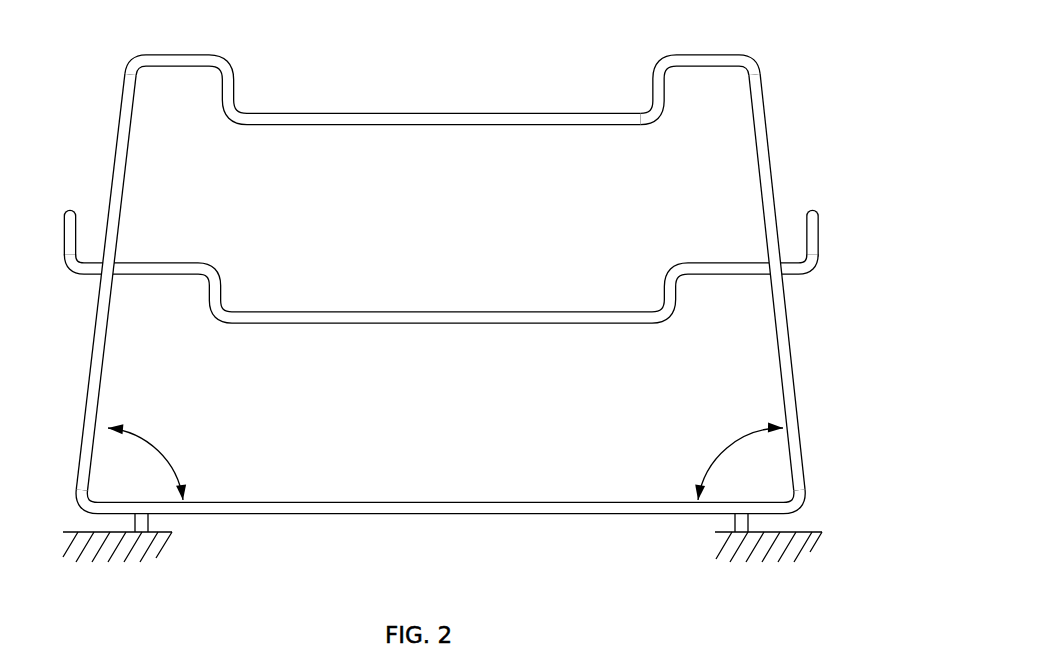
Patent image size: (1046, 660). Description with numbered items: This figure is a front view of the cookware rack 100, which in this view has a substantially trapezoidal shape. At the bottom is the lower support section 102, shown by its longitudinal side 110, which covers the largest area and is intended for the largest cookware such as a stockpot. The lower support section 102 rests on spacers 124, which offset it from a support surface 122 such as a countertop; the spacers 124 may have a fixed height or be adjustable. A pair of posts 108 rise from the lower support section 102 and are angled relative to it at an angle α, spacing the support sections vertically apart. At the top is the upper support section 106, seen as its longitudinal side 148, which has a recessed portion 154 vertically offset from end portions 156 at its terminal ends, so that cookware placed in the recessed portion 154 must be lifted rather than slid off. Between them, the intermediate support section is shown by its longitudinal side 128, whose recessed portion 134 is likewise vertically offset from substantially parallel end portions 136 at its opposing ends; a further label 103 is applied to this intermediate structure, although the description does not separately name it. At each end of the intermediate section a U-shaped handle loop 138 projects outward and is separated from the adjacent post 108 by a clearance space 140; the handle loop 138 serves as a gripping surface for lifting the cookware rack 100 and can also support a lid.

The cookware rack 100 is at (459, 299).
The lower support section 102 is at (474, 306).
The intermediate support wire 103 is at (482, 283).
The upper support section 106 is at (618, 127).
The post 108 is at (764, 136).
The longitudinal side of the lower support section 110 is at (405, 503).
The support surface 122 is at (98, 529).
The spacer 124 is at (148, 518).
The longitudinal side of the intermediate support section 128 is at (316, 324).
The recessed portion 134 is at (428, 312).
The end portion 136 is at (160, 264).
The handle loop 138 is at (818, 241).
The clearance space 140 is at (773, 239).
The longitudinal side of the upper support section 148 is at (457, 125).
The recessed portion 154 is at (402, 114).
The end portion 156 is at (193, 57).